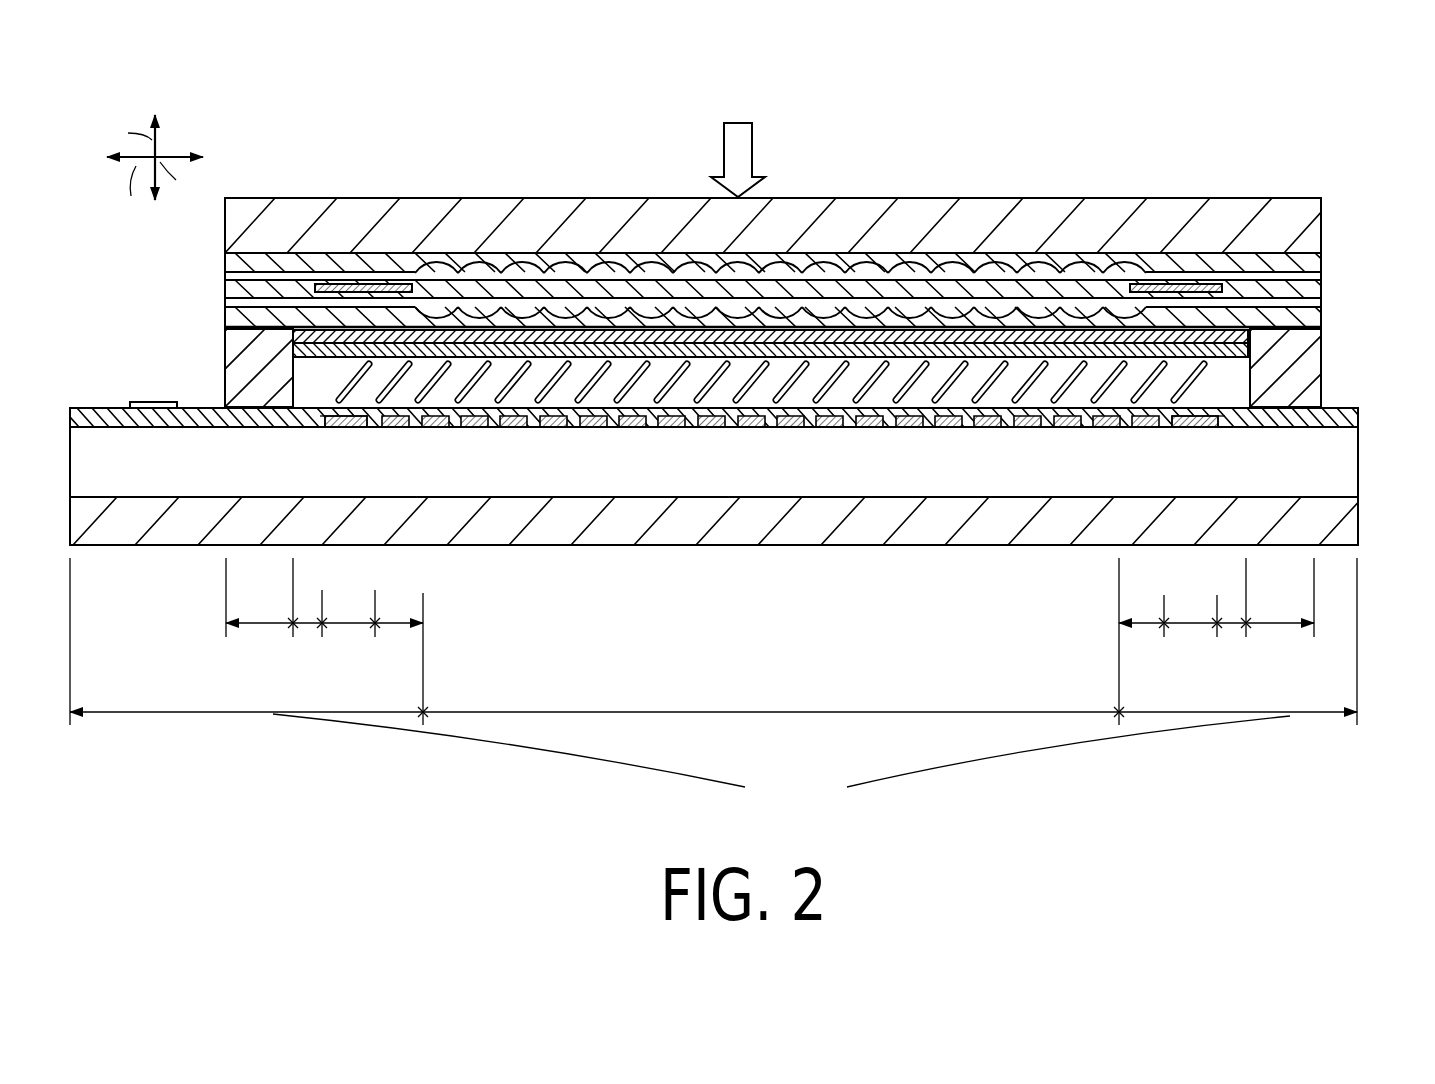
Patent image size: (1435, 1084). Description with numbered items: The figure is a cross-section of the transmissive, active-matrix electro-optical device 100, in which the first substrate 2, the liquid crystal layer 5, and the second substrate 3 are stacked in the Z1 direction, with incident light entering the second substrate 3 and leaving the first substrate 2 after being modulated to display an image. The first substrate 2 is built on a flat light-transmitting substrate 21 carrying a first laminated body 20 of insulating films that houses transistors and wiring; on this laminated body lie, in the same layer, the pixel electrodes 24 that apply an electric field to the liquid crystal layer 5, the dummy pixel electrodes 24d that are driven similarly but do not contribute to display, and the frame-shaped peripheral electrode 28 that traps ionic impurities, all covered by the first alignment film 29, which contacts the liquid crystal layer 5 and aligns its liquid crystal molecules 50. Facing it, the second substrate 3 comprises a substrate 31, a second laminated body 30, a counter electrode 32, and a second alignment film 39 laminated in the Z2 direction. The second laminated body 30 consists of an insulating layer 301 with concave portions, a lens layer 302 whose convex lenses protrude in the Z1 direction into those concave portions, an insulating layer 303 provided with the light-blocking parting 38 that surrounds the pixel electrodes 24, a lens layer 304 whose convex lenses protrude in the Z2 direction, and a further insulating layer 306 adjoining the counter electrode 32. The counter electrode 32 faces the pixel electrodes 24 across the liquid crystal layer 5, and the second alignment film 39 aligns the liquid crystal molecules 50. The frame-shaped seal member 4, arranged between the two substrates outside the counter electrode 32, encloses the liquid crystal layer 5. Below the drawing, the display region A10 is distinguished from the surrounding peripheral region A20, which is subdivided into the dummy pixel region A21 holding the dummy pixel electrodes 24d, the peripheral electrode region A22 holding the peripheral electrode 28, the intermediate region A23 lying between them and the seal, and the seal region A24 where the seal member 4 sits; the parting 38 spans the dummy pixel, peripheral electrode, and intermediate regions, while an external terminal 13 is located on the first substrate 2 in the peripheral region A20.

The electro-optical device 100 is at (1253, 156).
The first substrate 2 is at (1363, 538).
The second substrate 3 is at (1326, 236).
The seal member 4 is at (1280, 374).
The liquid crystal layer 5 is at (1218, 405).
The external terminal 13 is at (157, 401).
The first laminated body 20 is at (527, 465).
The substrate 21 is at (457, 515).
The pixel electrode 24 is at (640, 420).
The dummy pixel electrode 24d is at (410, 428).
The peripheral electrode 28 is at (338, 428).
The first alignment film 29 is at (1252, 425).
The second laminated body 30 is at (378, 140).
The insulating layer 301 is at (419, 258).
The lens layer 302 is at (480, 268).
The insulating layer 303 is at (541, 300).
The lens layer 304 is at (607, 300).
The lower layer 306 is at (668, 305).
The substrate 31 is at (342, 223).
The counter electrode 32 is at (822, 335).
The parting 38 is at (1180, 286).
The second alignment film 39 is at (948, 348).
The liquid crystal molecule 50 is at (742, 397).
The display region A10 is at (713, 653).
The peripheral region A20 is at (781, 762).
The dummy pixel region A21 is at (398, 625).
The peripheral electrode region A22 is at (352, 625).
The intermediate region A23 is at (314, 625).
The seal region A24 is at (324, 609).